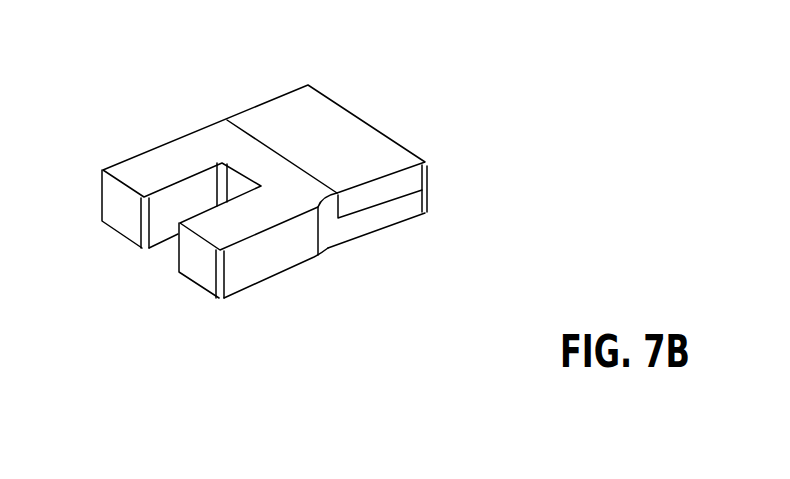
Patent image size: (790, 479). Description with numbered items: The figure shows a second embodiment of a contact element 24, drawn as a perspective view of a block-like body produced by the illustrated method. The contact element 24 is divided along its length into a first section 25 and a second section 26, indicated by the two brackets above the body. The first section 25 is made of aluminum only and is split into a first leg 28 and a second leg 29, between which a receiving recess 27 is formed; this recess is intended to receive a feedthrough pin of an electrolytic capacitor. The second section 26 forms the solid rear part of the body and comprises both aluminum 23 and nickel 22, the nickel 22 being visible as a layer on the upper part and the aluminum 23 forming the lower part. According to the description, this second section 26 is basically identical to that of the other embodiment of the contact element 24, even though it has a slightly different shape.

The nickel 22 is at (380, 153).
The aluminum 23 is at (300, 245).
The contact element 24 is at (443, 228).
The first section 25 is at (189, 101).
The second section 26 is at (302, 65).
The receiving recess 27 is at (158, 255).
The first leg 28 is at (118, 212).
The second leg 29 is at (195, 268).